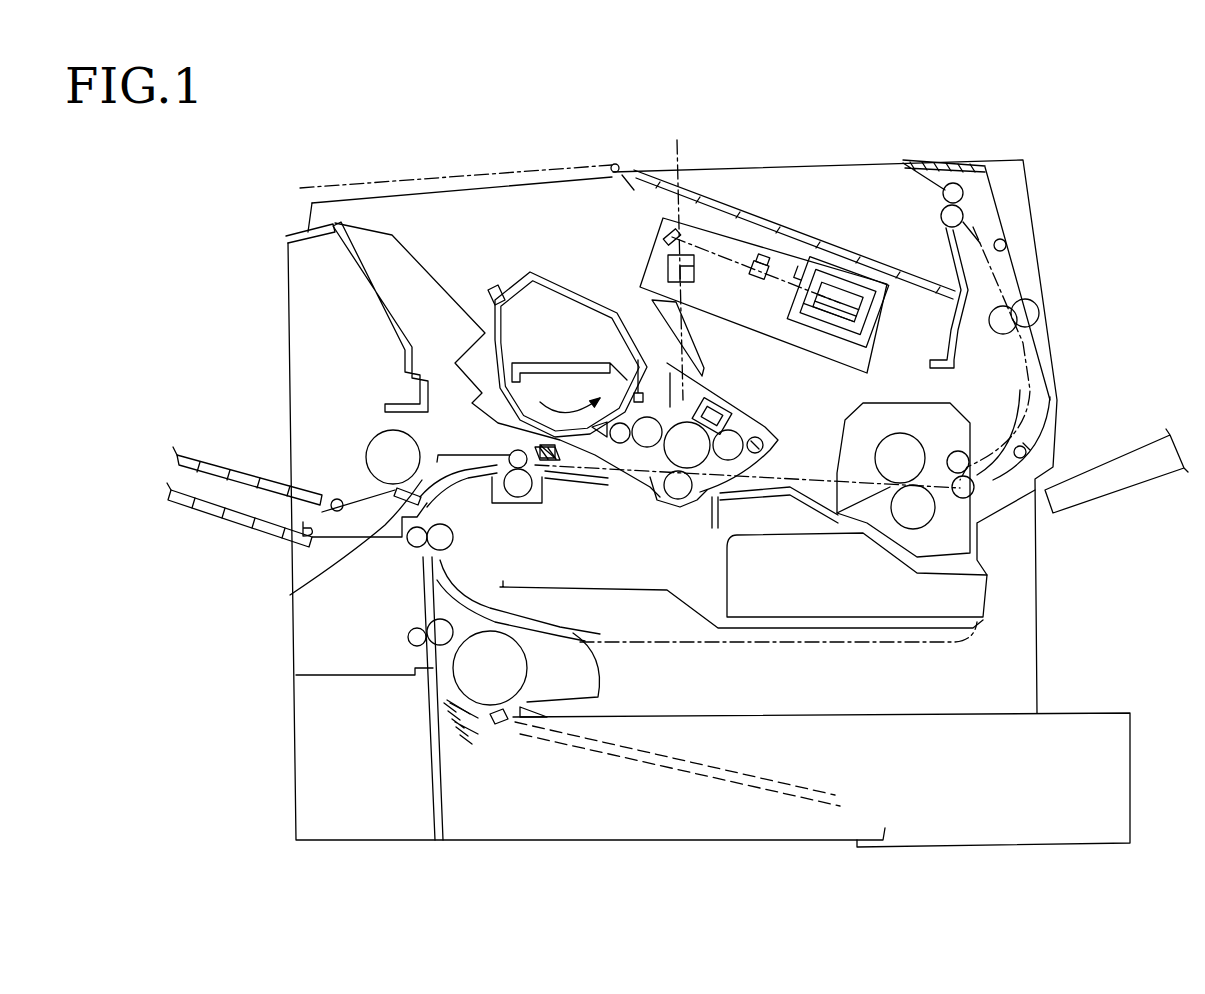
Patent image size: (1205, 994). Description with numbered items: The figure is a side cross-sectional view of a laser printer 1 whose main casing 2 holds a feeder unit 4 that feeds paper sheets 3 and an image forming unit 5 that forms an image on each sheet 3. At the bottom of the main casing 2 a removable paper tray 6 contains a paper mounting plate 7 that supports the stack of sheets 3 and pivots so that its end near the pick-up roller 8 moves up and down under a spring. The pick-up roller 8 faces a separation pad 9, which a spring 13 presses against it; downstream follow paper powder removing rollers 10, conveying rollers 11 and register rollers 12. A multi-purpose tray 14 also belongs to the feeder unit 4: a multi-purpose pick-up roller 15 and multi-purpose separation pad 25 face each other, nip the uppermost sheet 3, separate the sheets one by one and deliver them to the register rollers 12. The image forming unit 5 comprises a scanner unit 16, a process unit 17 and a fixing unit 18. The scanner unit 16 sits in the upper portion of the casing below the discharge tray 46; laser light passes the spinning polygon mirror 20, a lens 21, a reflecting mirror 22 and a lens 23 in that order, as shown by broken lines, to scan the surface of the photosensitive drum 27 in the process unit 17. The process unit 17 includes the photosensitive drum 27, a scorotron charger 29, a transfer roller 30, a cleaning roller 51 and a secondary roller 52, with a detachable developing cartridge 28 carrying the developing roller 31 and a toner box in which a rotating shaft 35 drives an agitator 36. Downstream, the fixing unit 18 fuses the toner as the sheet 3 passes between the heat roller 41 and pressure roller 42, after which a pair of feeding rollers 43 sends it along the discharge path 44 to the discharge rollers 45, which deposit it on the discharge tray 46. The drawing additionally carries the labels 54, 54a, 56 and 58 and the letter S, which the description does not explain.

The laser printer 1 is at (348, 178).
The main casing 2 is at (288, 333).
The paper sheet 3 is at (1060, 343).
The feeder unit 4 is at (612, 699).
The image forming unit 5 is at (640, 508).
The paper tray 6 is at (917, 790).
The paper mounting plate 7 is at (757, 790).
The pick-up roller 8 is at (485, 667).
The separation pad 9 is at (480, 715).
The paper powder removing rollers 10 is at (418, 628).
The conveying rollers 11 is at (448, 543).
The register rollers 12 is at (532, 496).
The spring 13 is at (447, 725).
The multi-purpose tray 14 is at (240, 520).
The multi-purpose pick-up roller 15 is at (388, 457).
The scanner unit 16 is at (727, 228).
The process unit 17 is at (573, 282).
The fixing unit 18 is at (955, 404).
The polygon mirror 20 is at (825, 287).
The lens 21 is at (772, 262).
The reflecting mirror 22 is at (669, 260).
The lens 23 is at (660, 242).
The multi-purpose separation pad 25 is at (292, 595).
The photosensitive drum 27 is at (728, 494).
The developing cartridge 28 is at (484, 332).
The scorotron charger 29 is at (717, 400).
The transfer roller 30 is at (676, 510).
The developing roller 31 is at (655, 420).
The rotating shaft 35 is at (566, 366).
The agitator 36 is at (589, 364).
The heat roller 41 is at (898, 452).
The pressure roller 42 is at (905, 510).
The feeding rollers 43 is at (968, 490).
The discharge path 44 is at (1006, 246).
The discharge rollers 45 is at (962, 218).
The discharge tray 46 is at (770, 205).
The cleaning roller 51 is at (575, 627).
The secondary roller 52 is at (755, 445).
The document cover 54 is at (530, 165).
The hinge 54a is at (614, 164).
The top cover 56 is at (414, 250).
The guide plate 58 is at (557, 475).
The sheet S is at (798, 478).